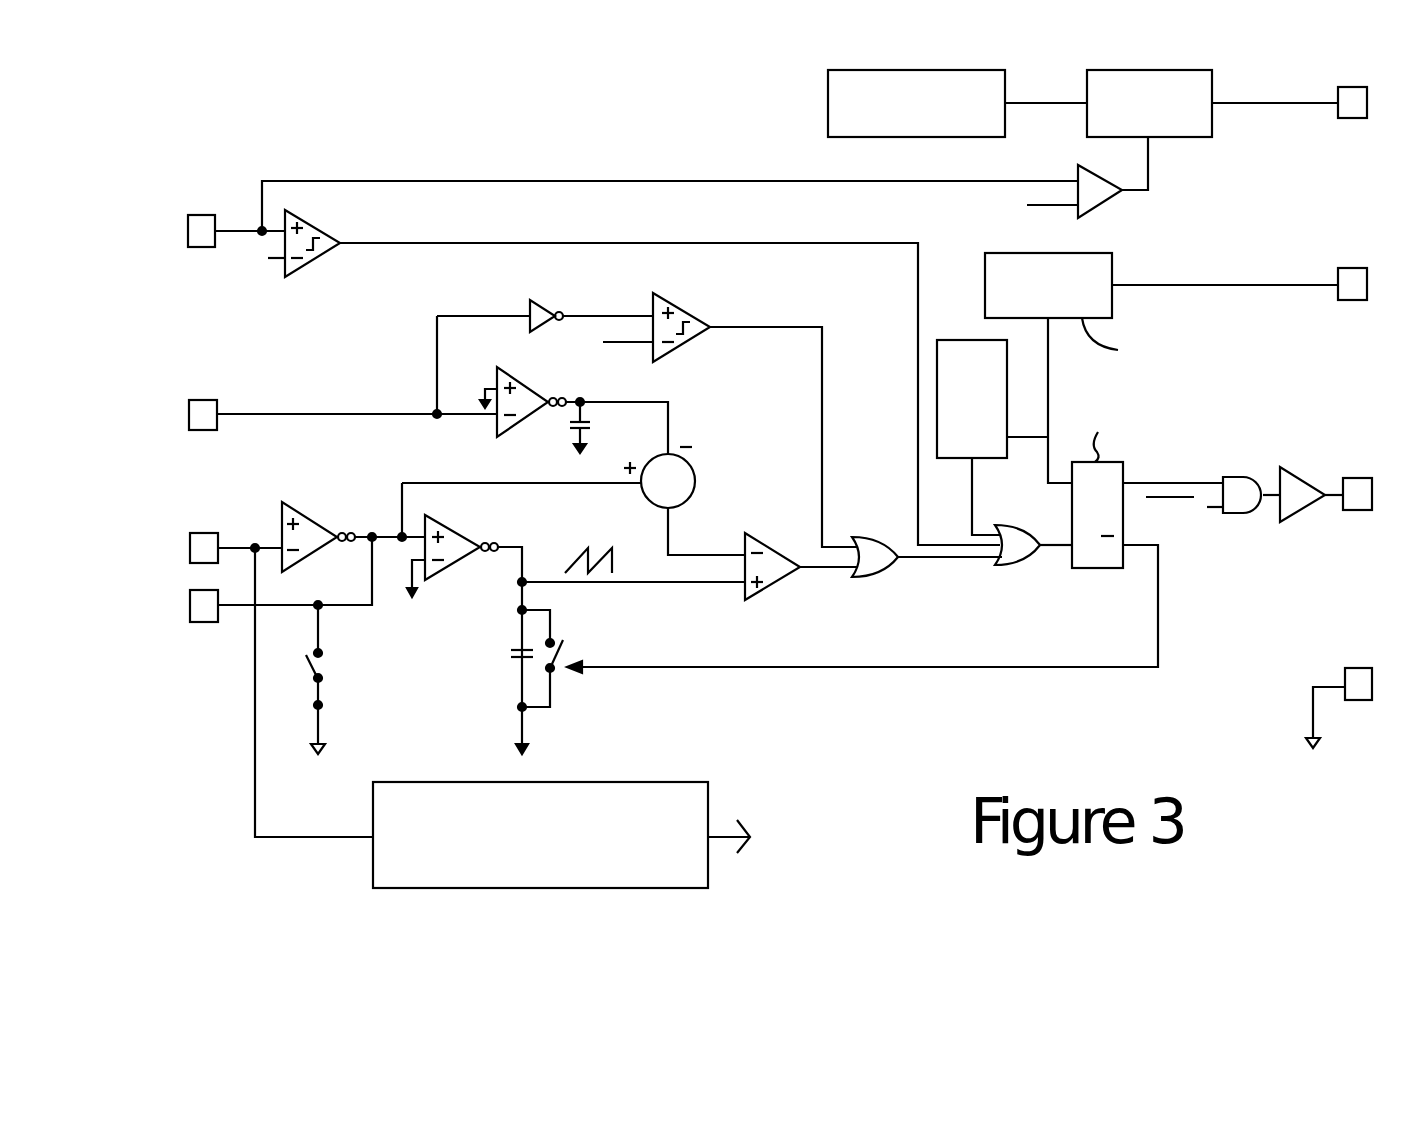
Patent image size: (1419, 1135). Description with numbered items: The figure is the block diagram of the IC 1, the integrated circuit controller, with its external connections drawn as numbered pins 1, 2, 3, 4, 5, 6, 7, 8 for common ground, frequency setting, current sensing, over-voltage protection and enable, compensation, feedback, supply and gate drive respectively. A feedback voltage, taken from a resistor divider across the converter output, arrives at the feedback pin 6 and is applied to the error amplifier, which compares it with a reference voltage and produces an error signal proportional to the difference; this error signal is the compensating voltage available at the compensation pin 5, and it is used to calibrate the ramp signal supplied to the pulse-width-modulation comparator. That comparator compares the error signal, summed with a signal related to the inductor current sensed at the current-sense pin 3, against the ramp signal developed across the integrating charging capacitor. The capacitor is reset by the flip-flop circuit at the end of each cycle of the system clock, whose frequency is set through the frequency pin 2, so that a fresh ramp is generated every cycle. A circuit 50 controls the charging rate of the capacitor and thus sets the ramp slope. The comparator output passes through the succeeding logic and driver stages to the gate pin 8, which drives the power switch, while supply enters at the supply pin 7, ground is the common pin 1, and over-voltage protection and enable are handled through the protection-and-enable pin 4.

The IC 1 is at (771, 479).
The FREQ pin 2 is at (1253, 302).
The ISNS pin 3 is at (327, 396).
The OVP/EN pin 4 is at (216, 249).
The COMP pin 5 is at (270, 597).
The VFB pin 6 is at (222, 529).
The Vcc pin 7 is at (1294, 120).
The GATE pin 8 is at (1360, 512).
The circuit 50 is at (446, 532).